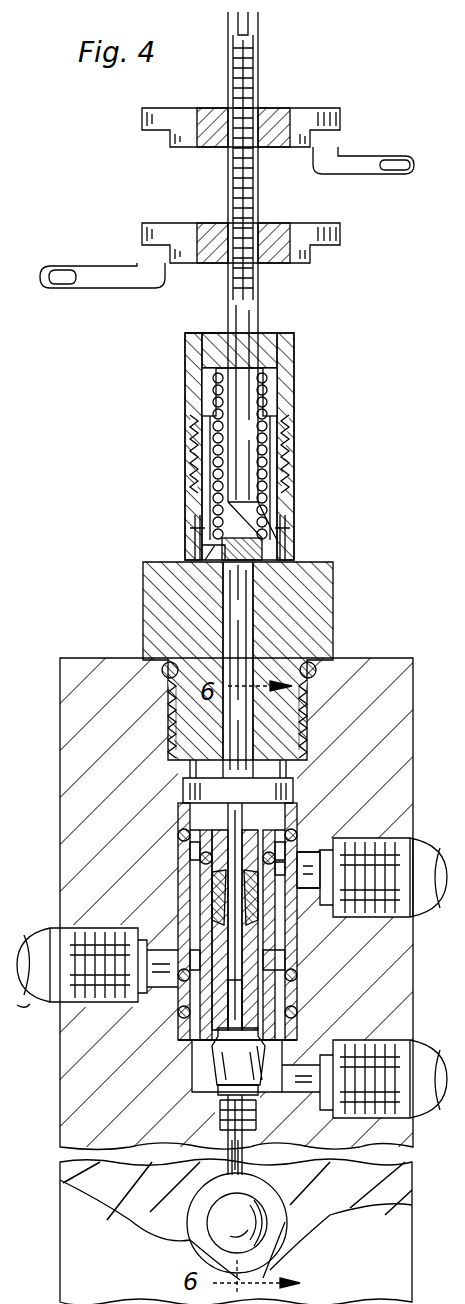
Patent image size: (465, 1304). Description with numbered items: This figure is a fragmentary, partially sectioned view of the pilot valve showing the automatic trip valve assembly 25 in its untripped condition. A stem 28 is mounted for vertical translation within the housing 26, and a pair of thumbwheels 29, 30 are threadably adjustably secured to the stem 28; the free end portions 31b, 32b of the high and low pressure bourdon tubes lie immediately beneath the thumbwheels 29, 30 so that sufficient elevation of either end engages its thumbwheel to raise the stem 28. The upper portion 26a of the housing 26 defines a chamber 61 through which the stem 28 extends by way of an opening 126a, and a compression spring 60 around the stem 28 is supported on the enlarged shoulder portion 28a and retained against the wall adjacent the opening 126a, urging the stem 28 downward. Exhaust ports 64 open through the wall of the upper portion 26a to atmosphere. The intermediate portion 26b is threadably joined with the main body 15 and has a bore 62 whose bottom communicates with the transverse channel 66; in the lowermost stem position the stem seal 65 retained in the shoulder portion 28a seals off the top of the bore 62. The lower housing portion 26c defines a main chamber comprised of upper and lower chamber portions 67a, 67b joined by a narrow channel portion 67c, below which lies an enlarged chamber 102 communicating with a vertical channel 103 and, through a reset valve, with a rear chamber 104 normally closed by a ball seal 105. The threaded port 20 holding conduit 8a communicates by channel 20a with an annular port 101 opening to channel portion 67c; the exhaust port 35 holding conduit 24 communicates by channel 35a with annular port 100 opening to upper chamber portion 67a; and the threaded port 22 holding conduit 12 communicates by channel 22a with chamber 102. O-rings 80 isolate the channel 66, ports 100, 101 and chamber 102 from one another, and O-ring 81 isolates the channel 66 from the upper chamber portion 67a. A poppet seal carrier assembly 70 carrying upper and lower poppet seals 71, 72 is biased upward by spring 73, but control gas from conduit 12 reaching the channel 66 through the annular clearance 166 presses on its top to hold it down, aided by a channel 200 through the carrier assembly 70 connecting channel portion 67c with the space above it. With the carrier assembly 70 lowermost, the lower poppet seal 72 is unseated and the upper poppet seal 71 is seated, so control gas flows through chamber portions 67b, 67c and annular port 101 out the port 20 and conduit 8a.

The stem 28 is at (258, 76).
The thumbwheel 29 is at (330, 108).
The thumbwheel 30 is at (318, 223).
The free end portion 31b is at (338, 155).
The free end portion 32b is at (140, 265).
The opening 126a is at (260, 345).
The upper portion 26a is at (195, 350).
The chamber 61 is at (270, 386).
The housing 26 is at (294, 408).
The trip valve assembly 25 is at (362, 480).
The compression spring 60 is at (208, 470).
The exhaust ports 64 is at (195, 528).
The stem seal 65 is at (205, 556).
The shoulder portion 28a is at (265, 556).
The bore 62 is at (238, 625).
The intermediate portion 26b is at (290, 672).
The main body 15 is at (70, 718).
The annular clearance 166 is at (310, 755).
The channel 66 is at (290, 792).
The O-rings 80 is at (182, 828).
The exhaust port 35 is at (397, 845).
The channel 35a is at (300, 860).
The O-ring 81 is at (200, 852).
The channel 200 is at (188, 862).
The upper poppet seal 71 is at (200, 874).
The annular port 100 is at (178, 890).
The threaded port 20 is at (78, 925).
The upper chamber portion 67a is at (305, 905).
The lower housing portion 26c is at (297, 930).
The conduit 24 is at (430, 915).
The channel portion 67c is at (255, 990).
The poppet seal carrier assembly 70 is at (342, 1020).
The channel 20a is at (180, 975).
The threaded port 22 is at (405, 1045).
The conduit 8a is at (34, 1006).
The annular port 101 is at (200, 1040).
The lower chamber portion 67b is at (205, 1055).
The chamber 102 is at (218, 1080).
The lower poppet seal 72 is at (262, 1095).
The spring 73 is at (226, 1128).
The channel 22a is at (310, 1088).
The conduit 12 is at (412, 1128).
The channel 103 is at (242, 1140).
The rear chamber 104 is at (190, 1210).
The ball seal 105 is at (215, 1230).